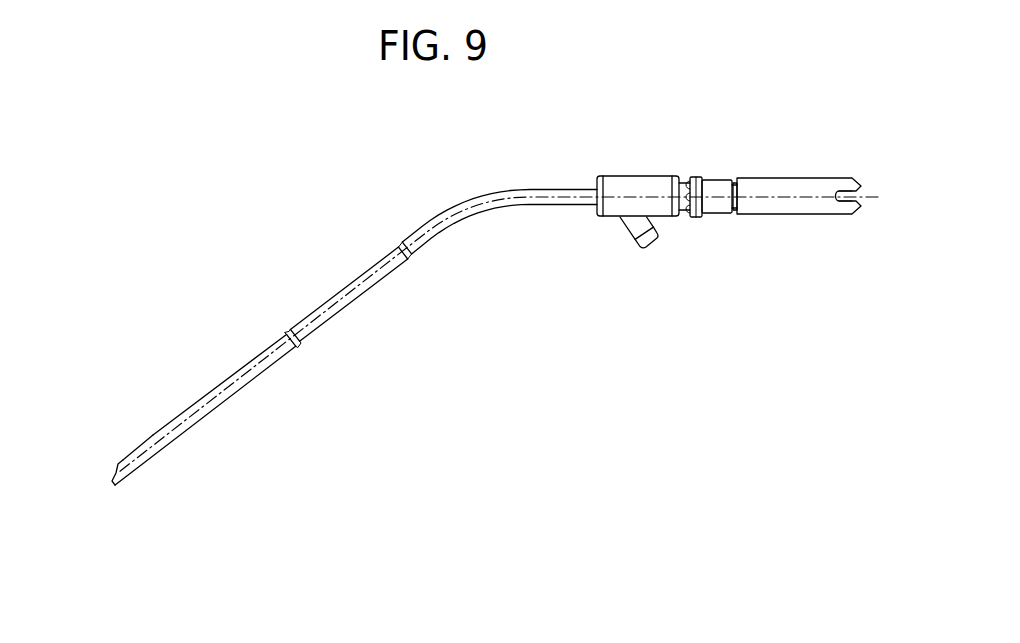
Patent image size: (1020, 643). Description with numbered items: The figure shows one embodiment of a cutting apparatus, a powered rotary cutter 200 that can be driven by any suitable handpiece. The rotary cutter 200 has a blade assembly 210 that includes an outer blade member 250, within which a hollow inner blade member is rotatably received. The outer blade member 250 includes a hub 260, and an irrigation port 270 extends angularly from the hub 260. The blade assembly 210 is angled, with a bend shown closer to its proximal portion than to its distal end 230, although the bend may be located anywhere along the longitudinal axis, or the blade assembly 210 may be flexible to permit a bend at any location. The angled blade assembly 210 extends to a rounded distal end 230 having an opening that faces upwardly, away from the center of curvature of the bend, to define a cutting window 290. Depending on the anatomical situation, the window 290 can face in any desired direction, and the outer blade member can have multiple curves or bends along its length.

The rotary cutter 200 is at (768, 252).
The blade assembly 210 is at (356, 250).
The distal end 230 is at (120, 490).
The outer blade member 250 is at (423, 262).
The hub 260 is at (645, 173).
The irrigation port 270 is at (626, 240).
The cutting window 290 is at (103, 460).